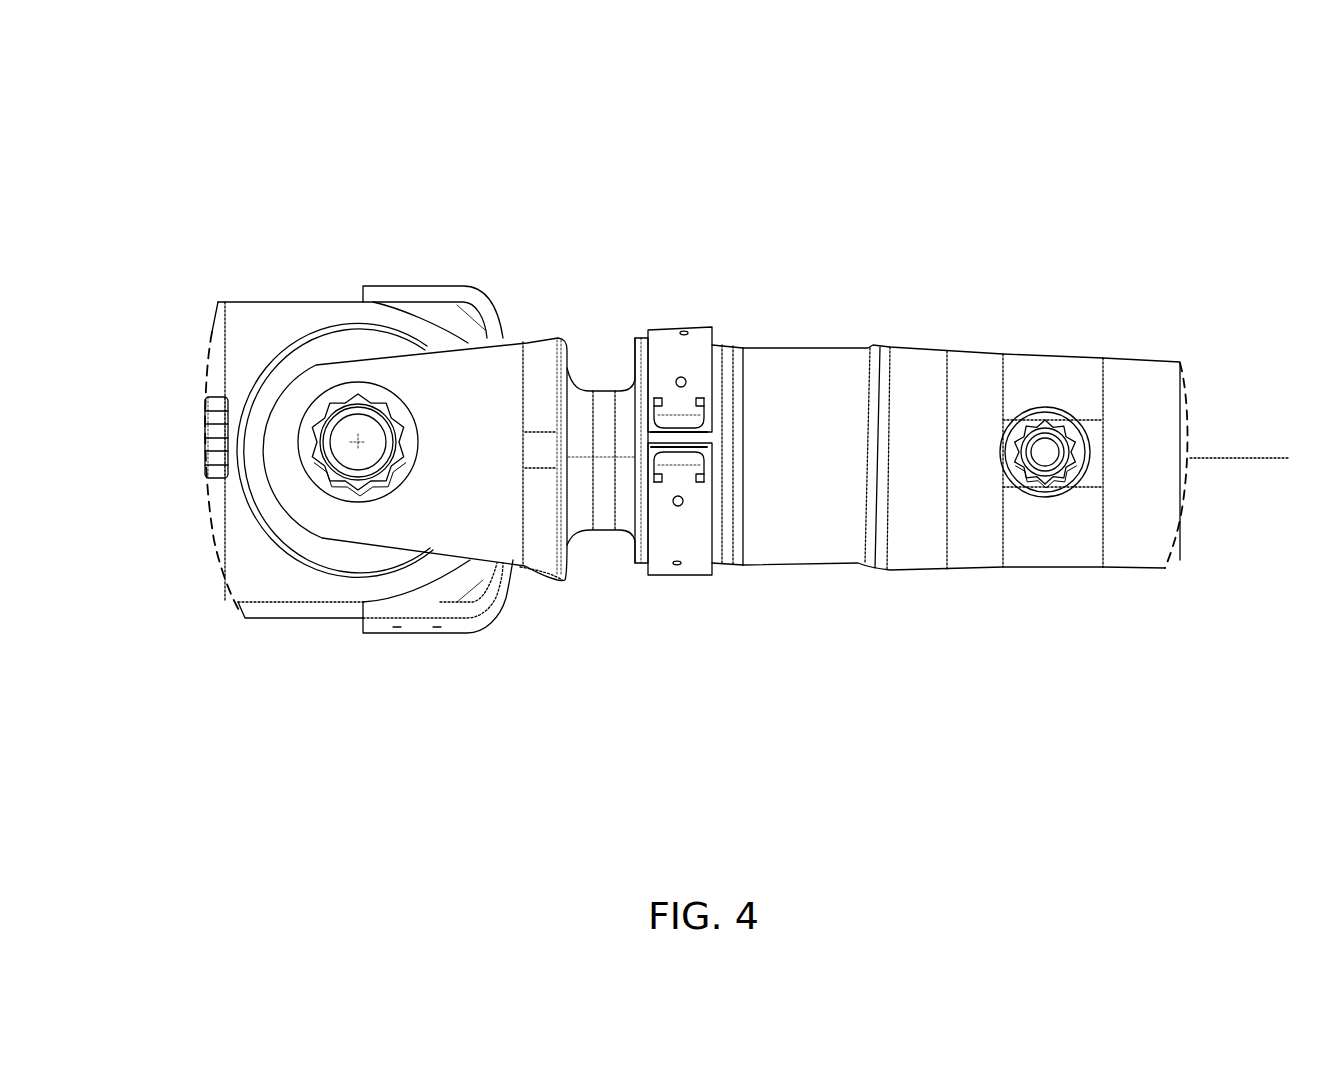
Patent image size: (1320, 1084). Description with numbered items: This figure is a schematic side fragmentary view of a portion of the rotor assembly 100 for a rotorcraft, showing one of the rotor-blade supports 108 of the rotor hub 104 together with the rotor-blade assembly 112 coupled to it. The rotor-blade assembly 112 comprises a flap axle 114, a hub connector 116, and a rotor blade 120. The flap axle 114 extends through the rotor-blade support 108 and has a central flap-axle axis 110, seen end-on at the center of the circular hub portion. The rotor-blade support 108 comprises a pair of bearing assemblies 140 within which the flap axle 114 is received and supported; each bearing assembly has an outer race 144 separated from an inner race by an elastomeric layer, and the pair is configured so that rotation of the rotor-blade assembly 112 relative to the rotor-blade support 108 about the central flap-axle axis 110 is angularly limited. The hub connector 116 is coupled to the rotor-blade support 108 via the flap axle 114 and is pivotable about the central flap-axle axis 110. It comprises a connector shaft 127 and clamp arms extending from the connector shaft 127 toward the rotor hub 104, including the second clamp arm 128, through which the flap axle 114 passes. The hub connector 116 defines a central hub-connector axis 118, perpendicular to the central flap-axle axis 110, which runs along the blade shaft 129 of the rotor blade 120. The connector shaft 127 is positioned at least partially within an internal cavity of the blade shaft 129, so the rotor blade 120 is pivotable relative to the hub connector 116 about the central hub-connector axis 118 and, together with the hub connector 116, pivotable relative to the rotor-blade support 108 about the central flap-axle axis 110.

The rotor assembly 100 is at (1120, 116).
The rotor hub 104 is at (308, 300).
The rotor-blade supports 108 is at (252, 296).
The central flap-axle axis 110 is at (358, 442).
The rotor-blade assemblies 112 is at (886, 278).
The flap axle 114 is at (338, 462).
The hub connector 116 is at (542, 334).
The central hub-connector axis 118 is at (1240, 461).
The rotor blade 120 is at (1153, 360).
The connector shaft 127 is at (605, 532).
The second clamp arm 128 is at (499, 466).
The blade shaft 129 is at (913, 570).
The pair of bearing assemblies 140 is at (342, 320).
The outer race 144 is at (254, 386).